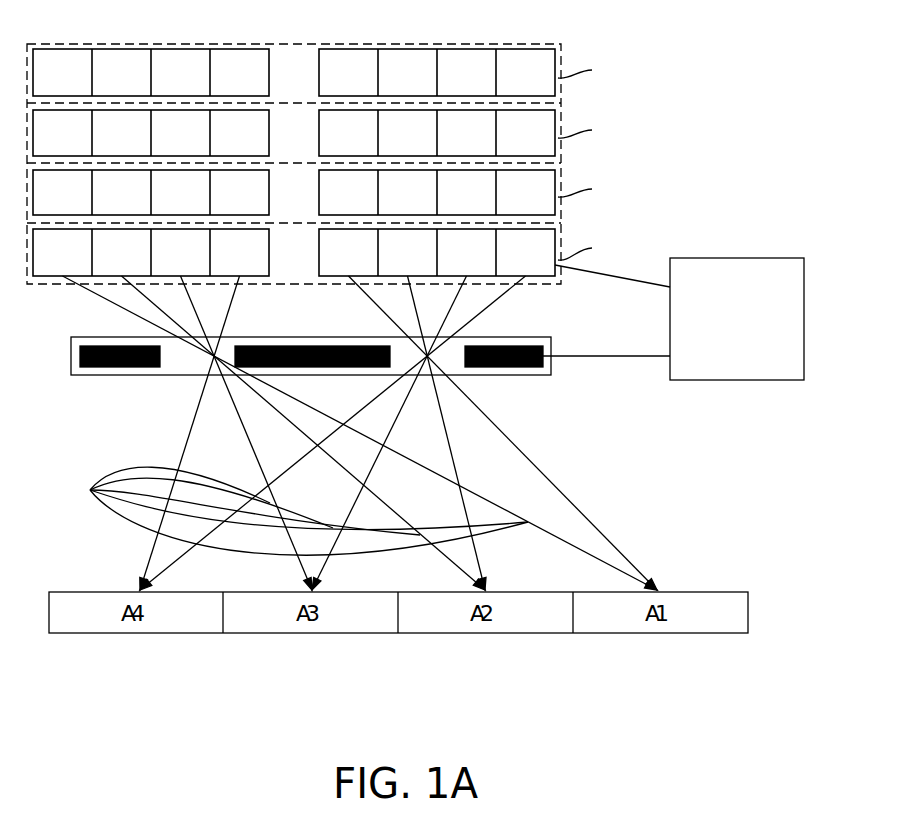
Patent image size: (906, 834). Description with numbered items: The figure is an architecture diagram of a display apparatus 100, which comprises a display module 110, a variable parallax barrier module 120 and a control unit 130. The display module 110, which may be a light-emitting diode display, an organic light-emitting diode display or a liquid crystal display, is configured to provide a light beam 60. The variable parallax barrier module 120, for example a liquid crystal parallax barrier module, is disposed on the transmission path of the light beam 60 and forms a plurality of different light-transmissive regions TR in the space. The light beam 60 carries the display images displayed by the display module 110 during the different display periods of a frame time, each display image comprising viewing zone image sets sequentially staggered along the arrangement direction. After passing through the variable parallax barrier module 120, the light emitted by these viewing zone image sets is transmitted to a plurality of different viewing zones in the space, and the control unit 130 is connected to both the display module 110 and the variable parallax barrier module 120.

The display module 110 is at (533, 43).
The variable parallax barrier module 120 is at (530, 375).
The control unit 130 is at (736, 380).
The light beam 60 is at (293, 511).
The light-transmissive region TR is at (453, 352).
The display apparatus 100 is at (740, 759).